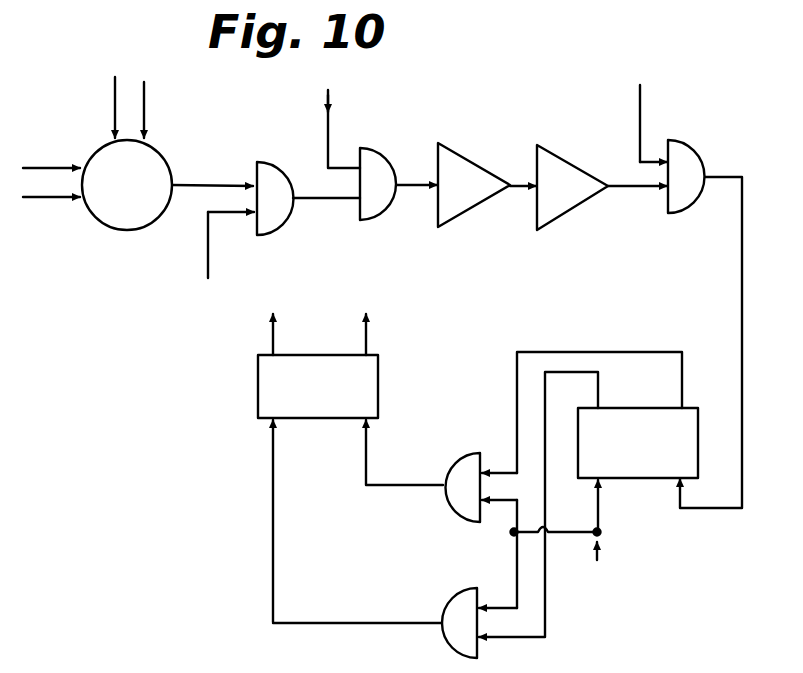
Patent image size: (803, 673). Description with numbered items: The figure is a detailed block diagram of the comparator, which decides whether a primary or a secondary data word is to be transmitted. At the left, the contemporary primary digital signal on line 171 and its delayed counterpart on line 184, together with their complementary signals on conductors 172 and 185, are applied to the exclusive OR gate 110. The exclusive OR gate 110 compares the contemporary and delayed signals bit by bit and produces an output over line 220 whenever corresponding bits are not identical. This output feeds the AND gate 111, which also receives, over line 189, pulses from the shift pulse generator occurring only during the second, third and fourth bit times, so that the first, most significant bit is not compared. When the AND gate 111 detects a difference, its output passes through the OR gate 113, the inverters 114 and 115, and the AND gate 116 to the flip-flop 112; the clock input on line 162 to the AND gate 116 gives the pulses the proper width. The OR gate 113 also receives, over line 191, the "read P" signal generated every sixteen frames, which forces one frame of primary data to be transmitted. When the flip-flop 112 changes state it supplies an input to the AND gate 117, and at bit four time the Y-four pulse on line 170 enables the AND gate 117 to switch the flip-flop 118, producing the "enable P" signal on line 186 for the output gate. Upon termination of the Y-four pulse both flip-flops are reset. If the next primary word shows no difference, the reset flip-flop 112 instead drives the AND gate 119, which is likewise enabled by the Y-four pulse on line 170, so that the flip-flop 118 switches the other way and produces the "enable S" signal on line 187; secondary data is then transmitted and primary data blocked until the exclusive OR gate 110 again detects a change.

The exclusive OR gate 110 is at (117, 223).
The line 171 is at (113, 102).
The conductor 172 is at (145, 95).
The line 184 is at (45, 167).
The conductor 185 is at (45, 198).
The line 220 is at (197, 182).
The AND gate 111 is at (275, 222).
The line 189 is at (210, 262).
The OR gate 113 is at (372, 208).
The line 191 is at (330, 93).
The inverter 114 is at (453, 212).
The inverter 115 is at (560, 210).
The AND gate 116 is at (692, 193).
The line 162 is at (645, 103).
The flip-flop 118 is at (347, 479).
The line 187 is at (275, 337).
The line 186 is at (368, 335).
The AND gate 117 is at (467, 460).
The flip-flop 112 is at (588, 494).
The AND gate 119 is at (455, 607).
The line 170 is at (598, 547).